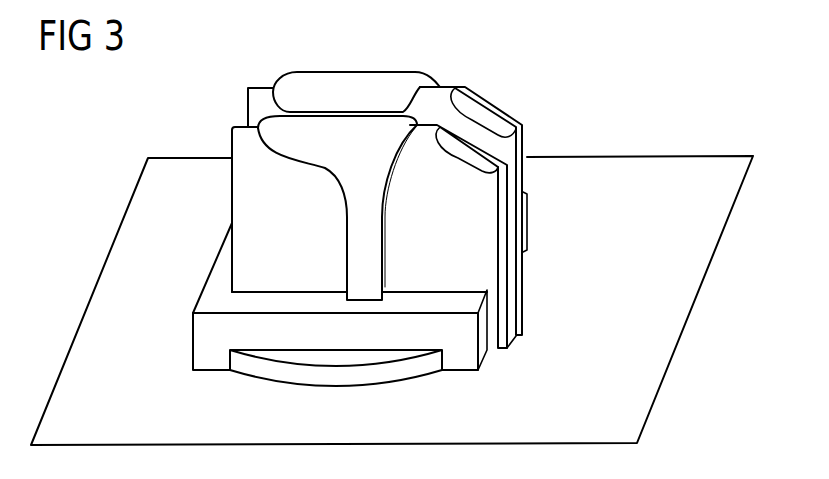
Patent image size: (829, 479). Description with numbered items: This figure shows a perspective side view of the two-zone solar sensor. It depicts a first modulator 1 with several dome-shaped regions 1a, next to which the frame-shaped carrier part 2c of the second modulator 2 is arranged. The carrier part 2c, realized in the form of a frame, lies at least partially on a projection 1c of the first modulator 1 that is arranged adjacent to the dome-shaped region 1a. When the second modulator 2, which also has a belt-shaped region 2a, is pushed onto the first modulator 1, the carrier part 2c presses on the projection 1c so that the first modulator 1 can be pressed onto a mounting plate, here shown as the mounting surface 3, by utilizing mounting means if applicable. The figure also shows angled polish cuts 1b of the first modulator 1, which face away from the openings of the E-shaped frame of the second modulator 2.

The first modulator 1 is at (507, 320).
The dome-shaped region of first modulator 1a is at (268, 163).
The angled polish cut region of first modulator 1b is at (490, 157).
The projection of first modulator 1c is at (337, 379).
The second modulator 2 is at (194, 345).
The belt-shaped region of second modulator 2a is at (365, 120).
The frame-shaped region of second modulator 2c is at (218, 300).
The mounting surface 3 is at (716, 232).